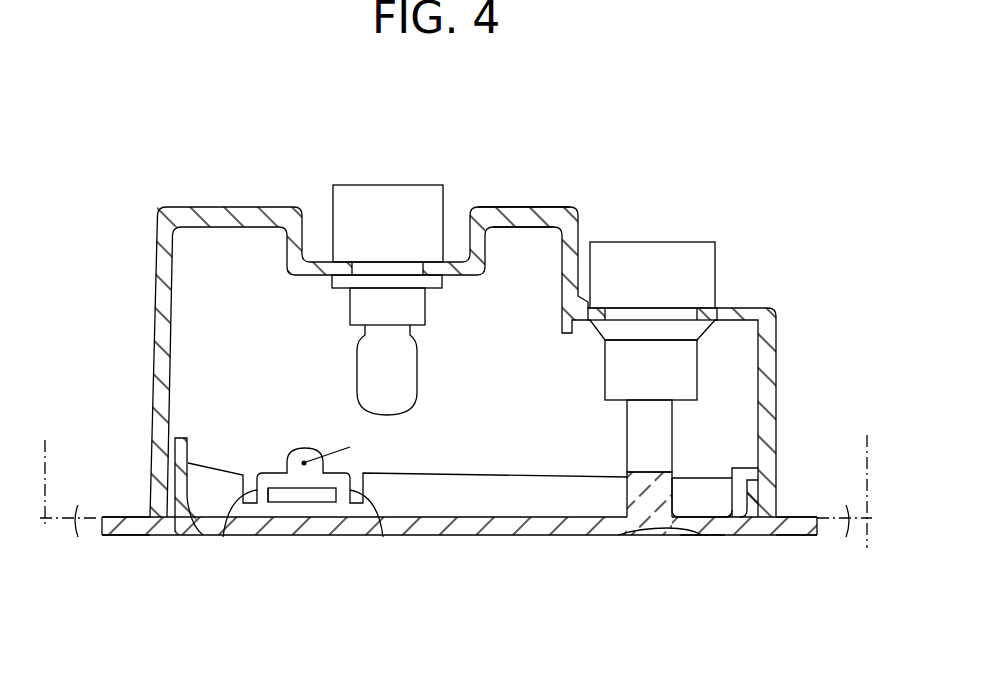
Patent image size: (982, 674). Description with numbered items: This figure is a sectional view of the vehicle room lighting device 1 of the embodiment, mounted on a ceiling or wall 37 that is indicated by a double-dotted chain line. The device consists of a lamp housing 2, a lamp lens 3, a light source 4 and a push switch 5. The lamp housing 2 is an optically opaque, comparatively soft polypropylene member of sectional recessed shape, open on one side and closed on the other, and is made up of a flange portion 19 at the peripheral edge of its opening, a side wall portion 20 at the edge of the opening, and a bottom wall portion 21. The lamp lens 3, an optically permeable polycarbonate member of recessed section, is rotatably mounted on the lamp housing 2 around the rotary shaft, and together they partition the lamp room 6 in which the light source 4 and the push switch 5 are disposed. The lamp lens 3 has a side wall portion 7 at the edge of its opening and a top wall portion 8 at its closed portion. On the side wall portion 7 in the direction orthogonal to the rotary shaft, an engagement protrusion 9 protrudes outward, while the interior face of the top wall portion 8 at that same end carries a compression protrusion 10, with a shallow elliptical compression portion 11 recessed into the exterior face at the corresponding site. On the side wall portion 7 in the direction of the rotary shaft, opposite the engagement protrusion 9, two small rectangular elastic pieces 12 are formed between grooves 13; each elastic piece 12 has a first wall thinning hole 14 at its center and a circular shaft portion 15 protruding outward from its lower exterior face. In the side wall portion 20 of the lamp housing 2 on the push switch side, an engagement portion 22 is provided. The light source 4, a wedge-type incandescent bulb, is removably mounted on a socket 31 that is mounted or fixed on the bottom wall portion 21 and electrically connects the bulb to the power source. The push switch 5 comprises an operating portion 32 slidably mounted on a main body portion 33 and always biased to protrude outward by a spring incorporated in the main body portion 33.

The vehicle room lighting device 1 is at (240, 160).
The lamp housing 2 is at (187, 203).
The lamp lens 3 is at (488, 538).
The light source 4 is at (421, 367).
The push switch 5 is at (717, 229).
The lamp room 6 is at (243, 321).
The side wall portion 7 is at (195, 537).
The top wall portion 8 is at (700, 537).
The engagement protrusion 9 is at (770, 470).
The compression protrusion 10 is at (627, 482).
The compression portion 11 is at (632, 525).
The elastic piece 12 is at (285, 484).
The groove 13 is at (238, 505).
The first wall thinning hole 14 is at (327, 495).
The shaft portion 15 is at (292, 453).
The flange portion 19 is at (112, 537).
The side wall portion 20 is at (155, 380).
The bottom wall portion 21 is at (523, 207).
The engagement portion 22 is at (766, 449).
The socket 31 is at (405, 185).
The operating portion 32 is at (626, 428).
The main body portion 33 is at (648, 250).
The ceiling or wall 37 is at (70, 540).